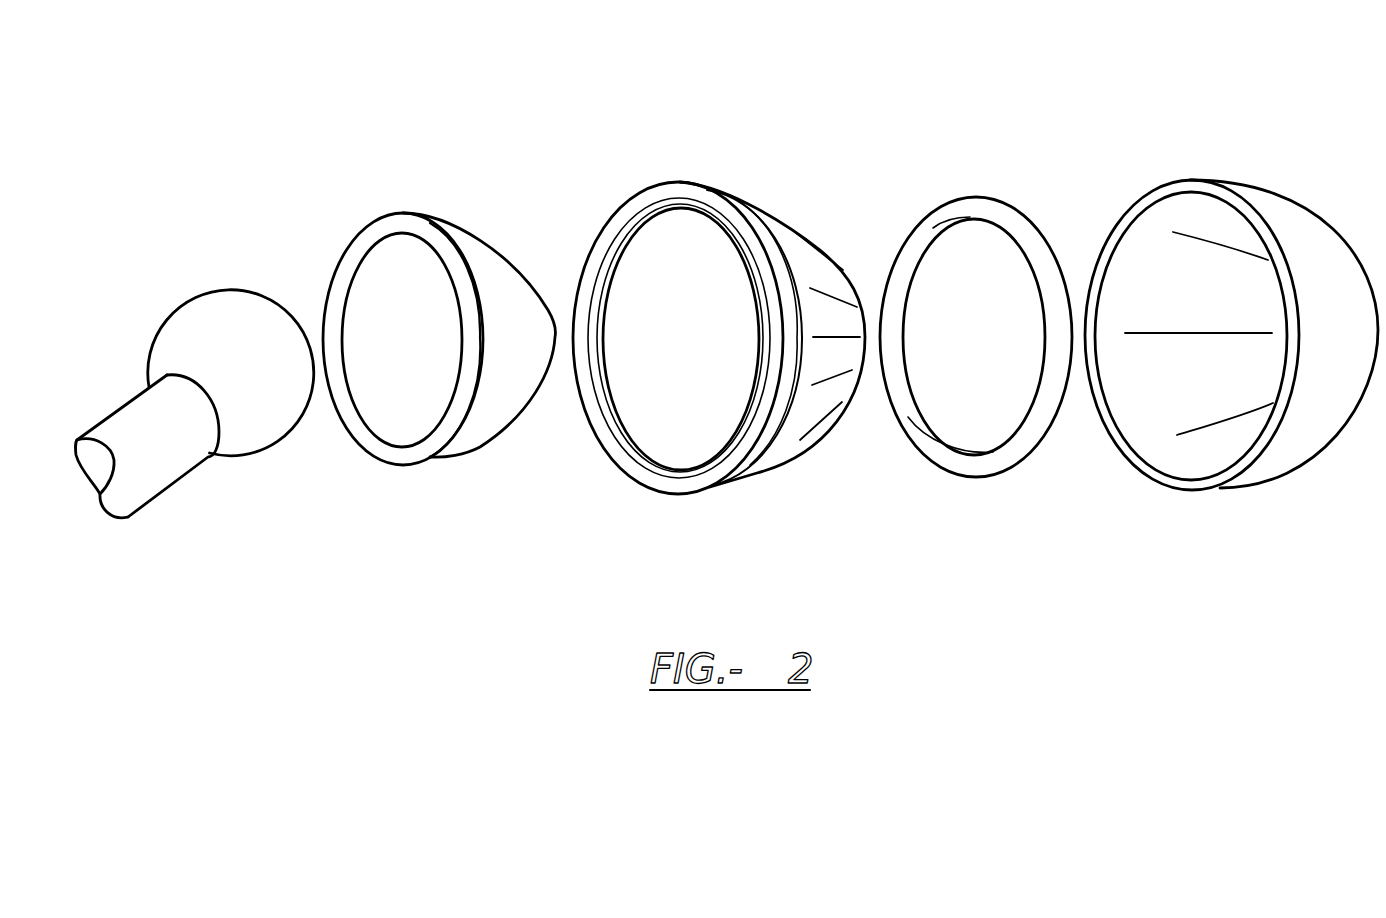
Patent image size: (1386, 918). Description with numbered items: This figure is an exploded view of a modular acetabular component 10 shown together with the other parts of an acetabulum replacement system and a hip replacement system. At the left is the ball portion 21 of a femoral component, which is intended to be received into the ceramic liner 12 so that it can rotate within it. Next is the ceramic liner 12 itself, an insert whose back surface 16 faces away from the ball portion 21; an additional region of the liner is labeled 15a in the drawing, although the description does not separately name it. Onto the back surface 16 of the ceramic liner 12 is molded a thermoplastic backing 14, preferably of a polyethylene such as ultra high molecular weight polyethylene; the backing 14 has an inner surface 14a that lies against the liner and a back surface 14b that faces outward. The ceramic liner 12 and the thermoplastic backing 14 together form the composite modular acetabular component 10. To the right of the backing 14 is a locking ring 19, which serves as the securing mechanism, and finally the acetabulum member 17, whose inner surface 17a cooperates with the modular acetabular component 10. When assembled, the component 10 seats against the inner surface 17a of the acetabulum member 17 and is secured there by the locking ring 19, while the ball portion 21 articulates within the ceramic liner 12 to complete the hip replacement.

The modular acetabular component 10 is at (920, 175).
The ceramic liner 12 is at (431, 381).
The thermoplastic backing 14 is at (715, 335).
The inner surface 14a is at (650, 270).
The back surface 14b is at (802, 417).
The reflector aperture 15a is at (380, 287).
The back surface 16 is at (495, 435).
The acetabulum member 17 is at (1207, 374).
The inner surface 17a is at (1168, 255).
The locking ring 19 is at (1002, 472).
The ball portion 21 is at (233, 317).